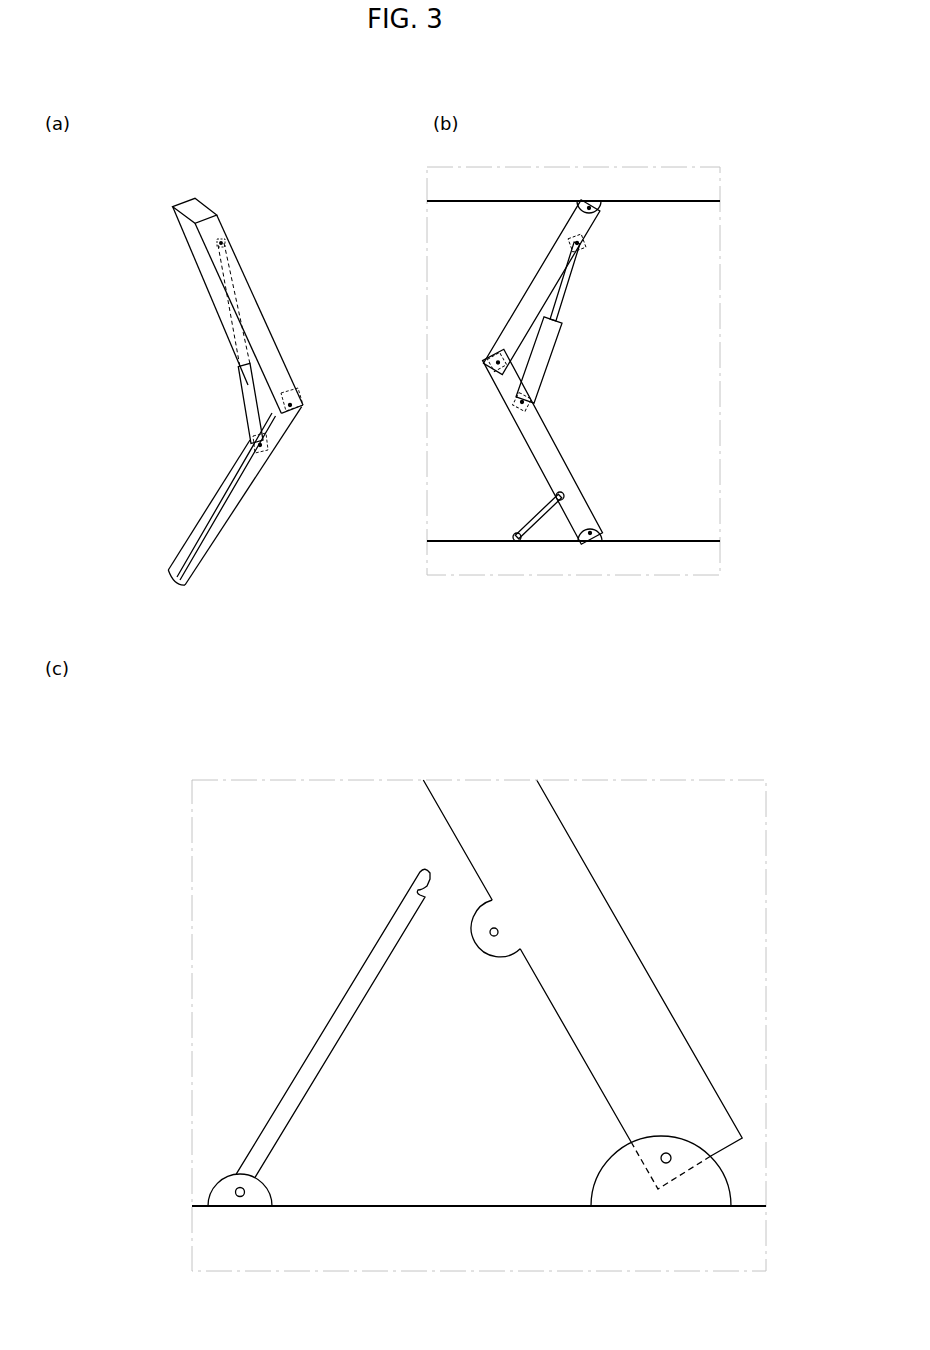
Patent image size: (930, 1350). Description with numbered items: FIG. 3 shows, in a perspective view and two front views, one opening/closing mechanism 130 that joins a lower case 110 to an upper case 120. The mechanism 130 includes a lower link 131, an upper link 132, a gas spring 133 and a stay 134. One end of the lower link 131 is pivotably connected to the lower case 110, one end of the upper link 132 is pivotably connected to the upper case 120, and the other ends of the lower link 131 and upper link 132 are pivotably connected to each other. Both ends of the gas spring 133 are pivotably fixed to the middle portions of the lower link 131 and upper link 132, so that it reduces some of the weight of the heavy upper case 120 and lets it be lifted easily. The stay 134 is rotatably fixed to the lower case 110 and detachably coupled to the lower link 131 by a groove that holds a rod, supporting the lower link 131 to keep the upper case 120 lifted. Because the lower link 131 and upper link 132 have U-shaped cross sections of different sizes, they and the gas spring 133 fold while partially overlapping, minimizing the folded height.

The lower case 110 is at (640, 558).
The upper case 120 is at (657, 181).
The opening/closing mechanism 130 is at (131, 176).
The lower link 131 is at (250, 470).
The upper link 132 is at (258, 332).
The gas spring 133 is at (252, 402).
The stay 134 is at (523, 513).